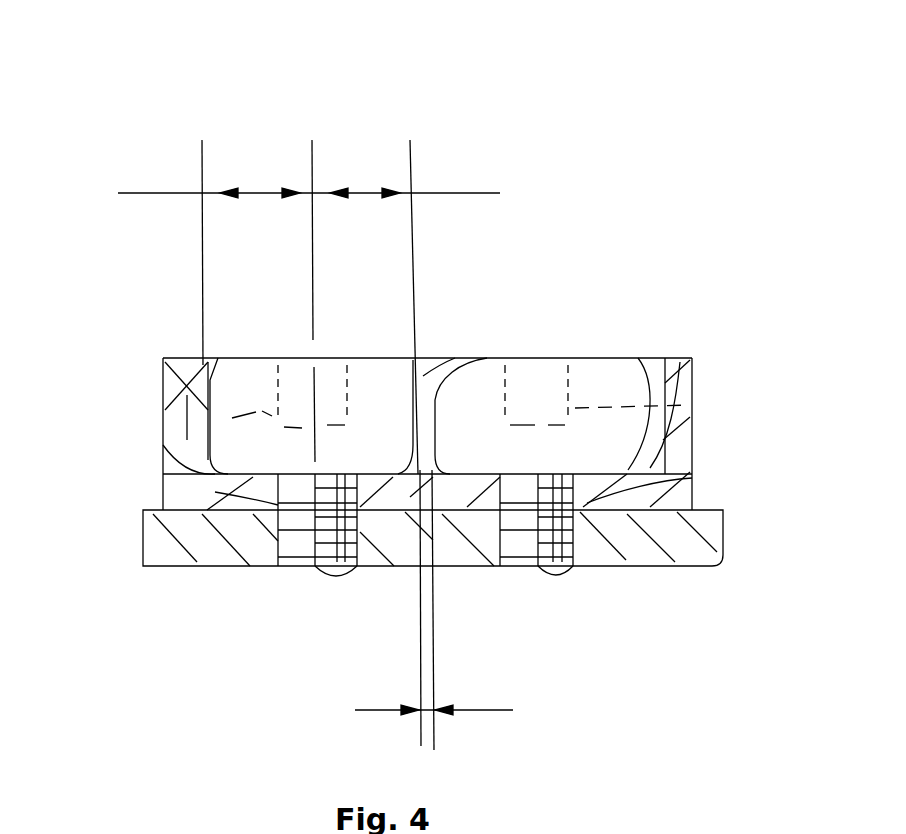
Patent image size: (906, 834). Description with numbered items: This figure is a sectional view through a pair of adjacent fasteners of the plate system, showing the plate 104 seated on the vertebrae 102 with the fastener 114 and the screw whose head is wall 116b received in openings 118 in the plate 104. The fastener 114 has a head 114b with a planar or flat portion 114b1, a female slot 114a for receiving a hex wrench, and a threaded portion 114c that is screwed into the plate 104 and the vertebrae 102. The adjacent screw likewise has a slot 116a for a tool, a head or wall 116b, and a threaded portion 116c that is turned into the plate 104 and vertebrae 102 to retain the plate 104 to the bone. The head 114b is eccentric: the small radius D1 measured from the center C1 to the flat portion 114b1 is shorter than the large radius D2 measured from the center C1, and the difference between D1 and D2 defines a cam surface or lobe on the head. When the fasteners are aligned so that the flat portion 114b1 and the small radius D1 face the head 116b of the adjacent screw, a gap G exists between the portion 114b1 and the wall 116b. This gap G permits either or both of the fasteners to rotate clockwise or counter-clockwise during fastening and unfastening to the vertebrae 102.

The vertebrae 102 is at (722, 566).
The plate 104 is at (688, 358).
The fastener 114 is at (163, 358).
The slot 114a is at (146, 392).
The head 114b is at (163, 437).
The flat portion 114b1 is at (455, 358).
The threaded portion 114c is at (293, 572).
The slot 116a is at (690, 405).
The head 116b is at (483, 358).
The threaded portion 116c is at (548, 568).
The openings 118 is at (215, 492).
The center C1 is at (313, 140).
The small radius D1 is at (441, 307).
The large radius D2 is at (175, 252).
The gap G is at (411, 610).